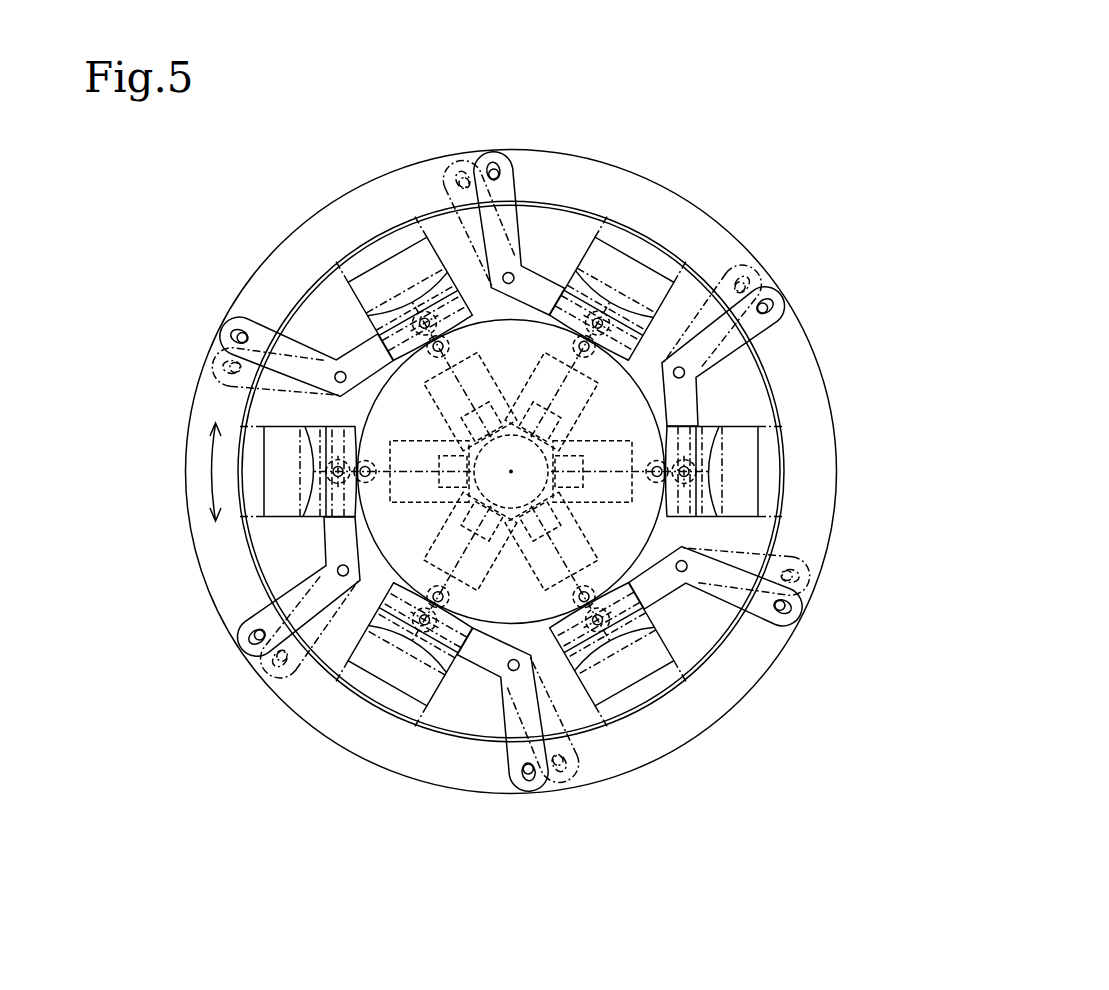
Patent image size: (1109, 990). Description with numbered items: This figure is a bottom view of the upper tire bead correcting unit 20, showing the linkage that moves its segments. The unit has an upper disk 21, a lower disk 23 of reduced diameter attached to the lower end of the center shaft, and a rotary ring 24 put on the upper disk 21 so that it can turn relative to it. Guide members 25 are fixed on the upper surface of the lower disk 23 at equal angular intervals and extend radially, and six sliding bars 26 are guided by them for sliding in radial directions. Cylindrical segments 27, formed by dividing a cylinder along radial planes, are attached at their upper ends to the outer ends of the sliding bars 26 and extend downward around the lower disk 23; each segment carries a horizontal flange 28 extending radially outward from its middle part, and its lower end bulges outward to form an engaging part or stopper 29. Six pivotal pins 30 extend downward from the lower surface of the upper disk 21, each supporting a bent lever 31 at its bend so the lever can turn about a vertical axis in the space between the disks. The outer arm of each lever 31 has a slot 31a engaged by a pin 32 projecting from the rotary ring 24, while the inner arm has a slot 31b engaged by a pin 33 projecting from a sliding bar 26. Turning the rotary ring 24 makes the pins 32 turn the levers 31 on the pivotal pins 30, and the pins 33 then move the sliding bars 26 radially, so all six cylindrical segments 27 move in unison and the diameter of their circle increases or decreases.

The upper tire bead correcting unit 20 is at (316, 182).
The upper disk 21 is at (275, 556).
The lower disk 23 is at (282, 688).
The rotary ring 24 is at (188, 410).
The guide members 25 is at (498, 380).
The sliding bars 26 is at (447, 398).
The cylindrical segments 27 is at (705, 512).
The horizontal flange 28 is at (705, 462).
The engaging part or stopper 29 is at (418, 295).
The pivotal pins 30 is at (511, 275).
The bent levers 31 is at (513, 238).
The slot 31a is at (497, 160).
The slot 31b is at (592, 303).
The pins 32 is at (499, 172).
The pins 33 is at (600, 318).